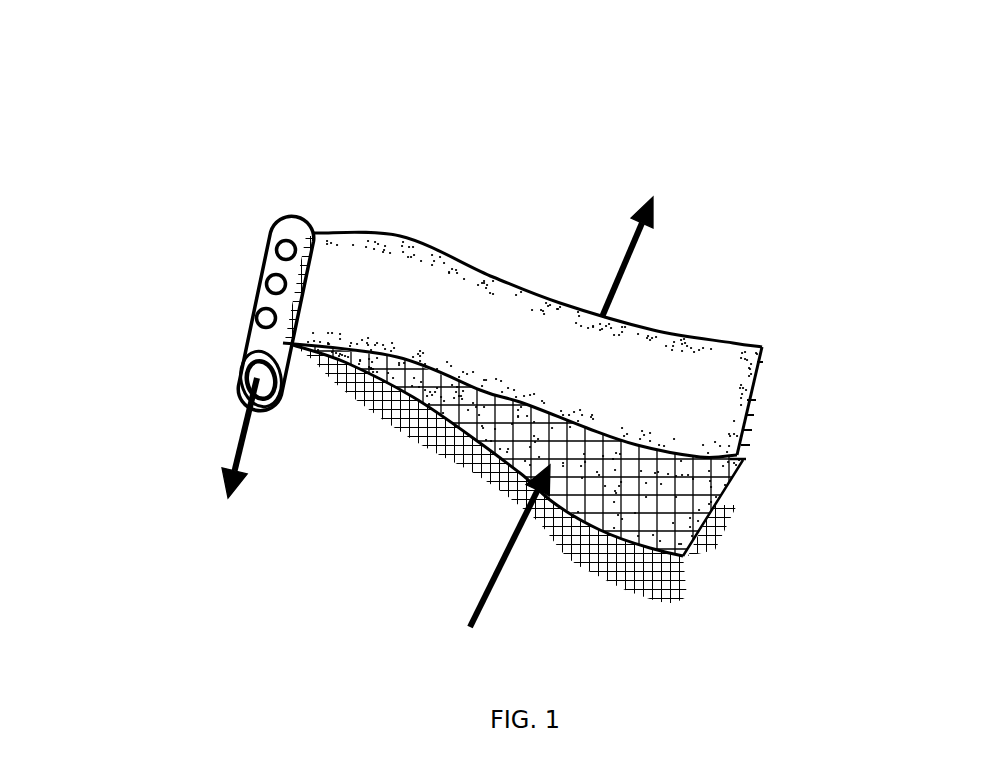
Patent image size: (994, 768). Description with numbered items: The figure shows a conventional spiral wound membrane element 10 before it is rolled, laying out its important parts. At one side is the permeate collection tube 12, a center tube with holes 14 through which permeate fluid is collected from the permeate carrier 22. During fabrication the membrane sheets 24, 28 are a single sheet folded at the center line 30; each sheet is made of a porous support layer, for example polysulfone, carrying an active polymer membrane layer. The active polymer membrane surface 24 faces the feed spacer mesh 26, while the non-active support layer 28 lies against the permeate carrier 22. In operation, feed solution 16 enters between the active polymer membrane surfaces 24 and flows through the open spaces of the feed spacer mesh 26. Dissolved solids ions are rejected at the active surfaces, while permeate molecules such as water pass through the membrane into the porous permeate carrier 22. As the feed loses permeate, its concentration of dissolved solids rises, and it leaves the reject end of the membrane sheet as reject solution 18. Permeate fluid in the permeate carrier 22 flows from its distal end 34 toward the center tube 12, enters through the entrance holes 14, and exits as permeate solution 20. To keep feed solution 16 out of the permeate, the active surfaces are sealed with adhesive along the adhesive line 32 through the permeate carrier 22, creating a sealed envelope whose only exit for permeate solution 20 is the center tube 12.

The spiral wound membrane element 10 is at (432, 127).
The permeate collection tube 12 is at (240, 347).
The holes 14 is at (287, 247).
The center line 30 is at (307, 223).
The permeate solution 20 is at (240, 450).
The adhesive line 32 is at (492, 278).
The non-active support layer 28 is at (718, 388).
The distal end 34 is at (757, 367).
The active polymer membrane surface 24 is at (527, 460).
The permeate carrier 22 is at (682, 572).
The feed spacer mesh 26 is at (718, 475).
The feed solution 16 is at (485, 583).
The reject solution 18 is at (625, 240).